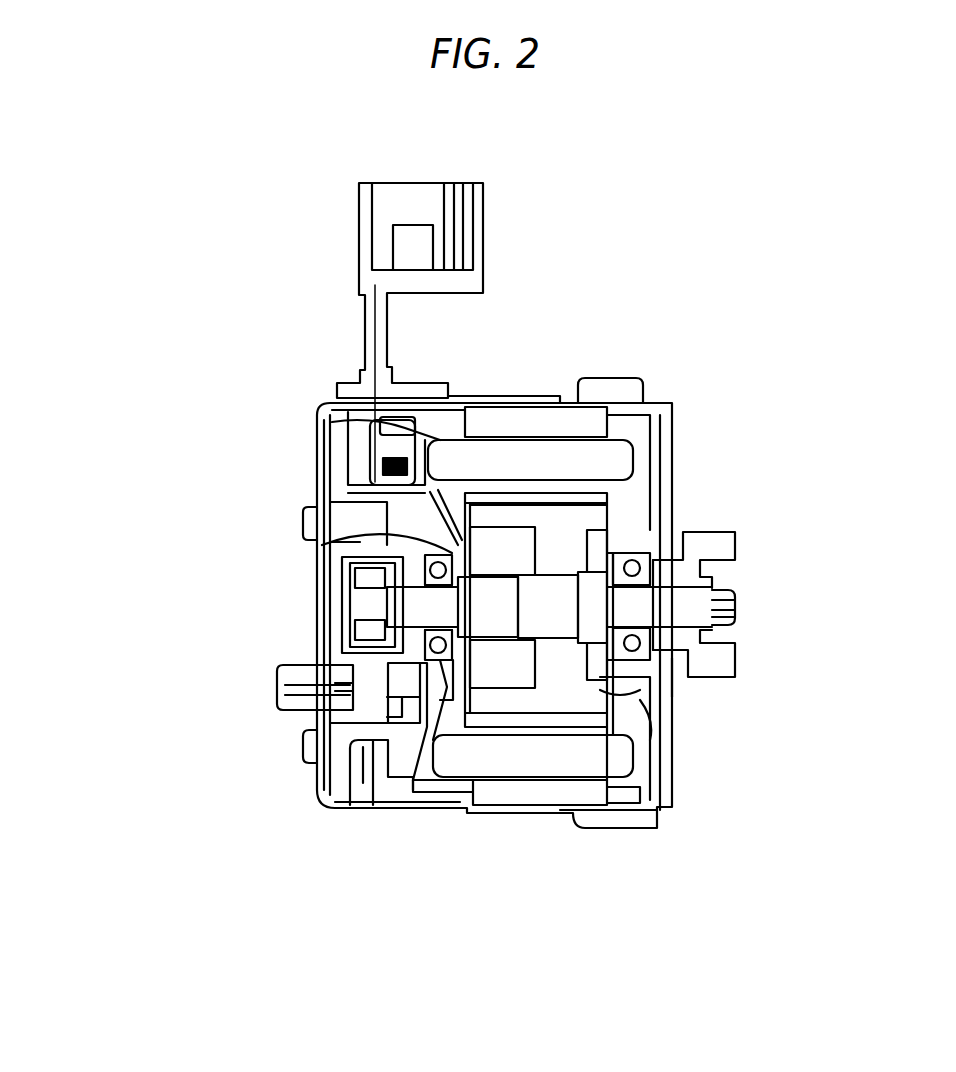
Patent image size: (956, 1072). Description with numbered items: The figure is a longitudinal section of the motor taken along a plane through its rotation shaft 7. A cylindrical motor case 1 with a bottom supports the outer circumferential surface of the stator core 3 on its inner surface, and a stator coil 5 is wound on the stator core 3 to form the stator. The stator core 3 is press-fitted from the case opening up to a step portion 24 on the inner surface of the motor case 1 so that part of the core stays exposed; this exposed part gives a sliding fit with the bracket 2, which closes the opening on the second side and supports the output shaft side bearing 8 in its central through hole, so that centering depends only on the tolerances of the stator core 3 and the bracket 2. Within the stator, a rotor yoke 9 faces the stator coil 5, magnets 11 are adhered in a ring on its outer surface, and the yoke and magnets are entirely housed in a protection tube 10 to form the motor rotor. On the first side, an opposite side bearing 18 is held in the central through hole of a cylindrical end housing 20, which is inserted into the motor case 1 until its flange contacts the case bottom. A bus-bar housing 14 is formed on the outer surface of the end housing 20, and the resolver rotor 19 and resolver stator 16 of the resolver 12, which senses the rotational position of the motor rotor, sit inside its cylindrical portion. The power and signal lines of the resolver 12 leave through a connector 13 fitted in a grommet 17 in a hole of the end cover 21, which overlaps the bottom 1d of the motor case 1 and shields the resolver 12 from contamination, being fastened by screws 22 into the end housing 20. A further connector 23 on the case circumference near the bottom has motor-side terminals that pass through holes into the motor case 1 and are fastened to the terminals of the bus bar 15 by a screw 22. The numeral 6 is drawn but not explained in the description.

The motor case 1 is at (505, 397).
The bottom of the motor case 1d is at (310, 770).
The bracket 2 is at (620, 380).
The stator core 3 is at (590, 417).
The stator coil 5 is at (620, 452).
The end bracket 6 is at (722, 540).
The rotation shaft 7 is at (693, 595).
The output shaft side bearing 8 is at (640, 645).
The rotor yoke 9 is at (572, 665).
The protection tube 10 is at (643, 720).
The magnets 11 is at (607, 810).
The resolver 12 is at (300, 600).
The connector 13 is at (280, 690).
The bus-bar housing 14 is at (428, 808).
The bus bar 15 is at (362, 808).
The resolver stator 16 is at (373, 702).
The grommet 17 is at (335, 655).
The opposite side bearing 18 is at (430, 548).
The resolver rotor 19 is at (375, 580).
The end housing 20 is at (400, 527).
The end cover 21 is at (315, 455).
The screw 22 is at (363, 420).
The connector 23 is at (363, 268).
The step portion 24 is at (468, 396).